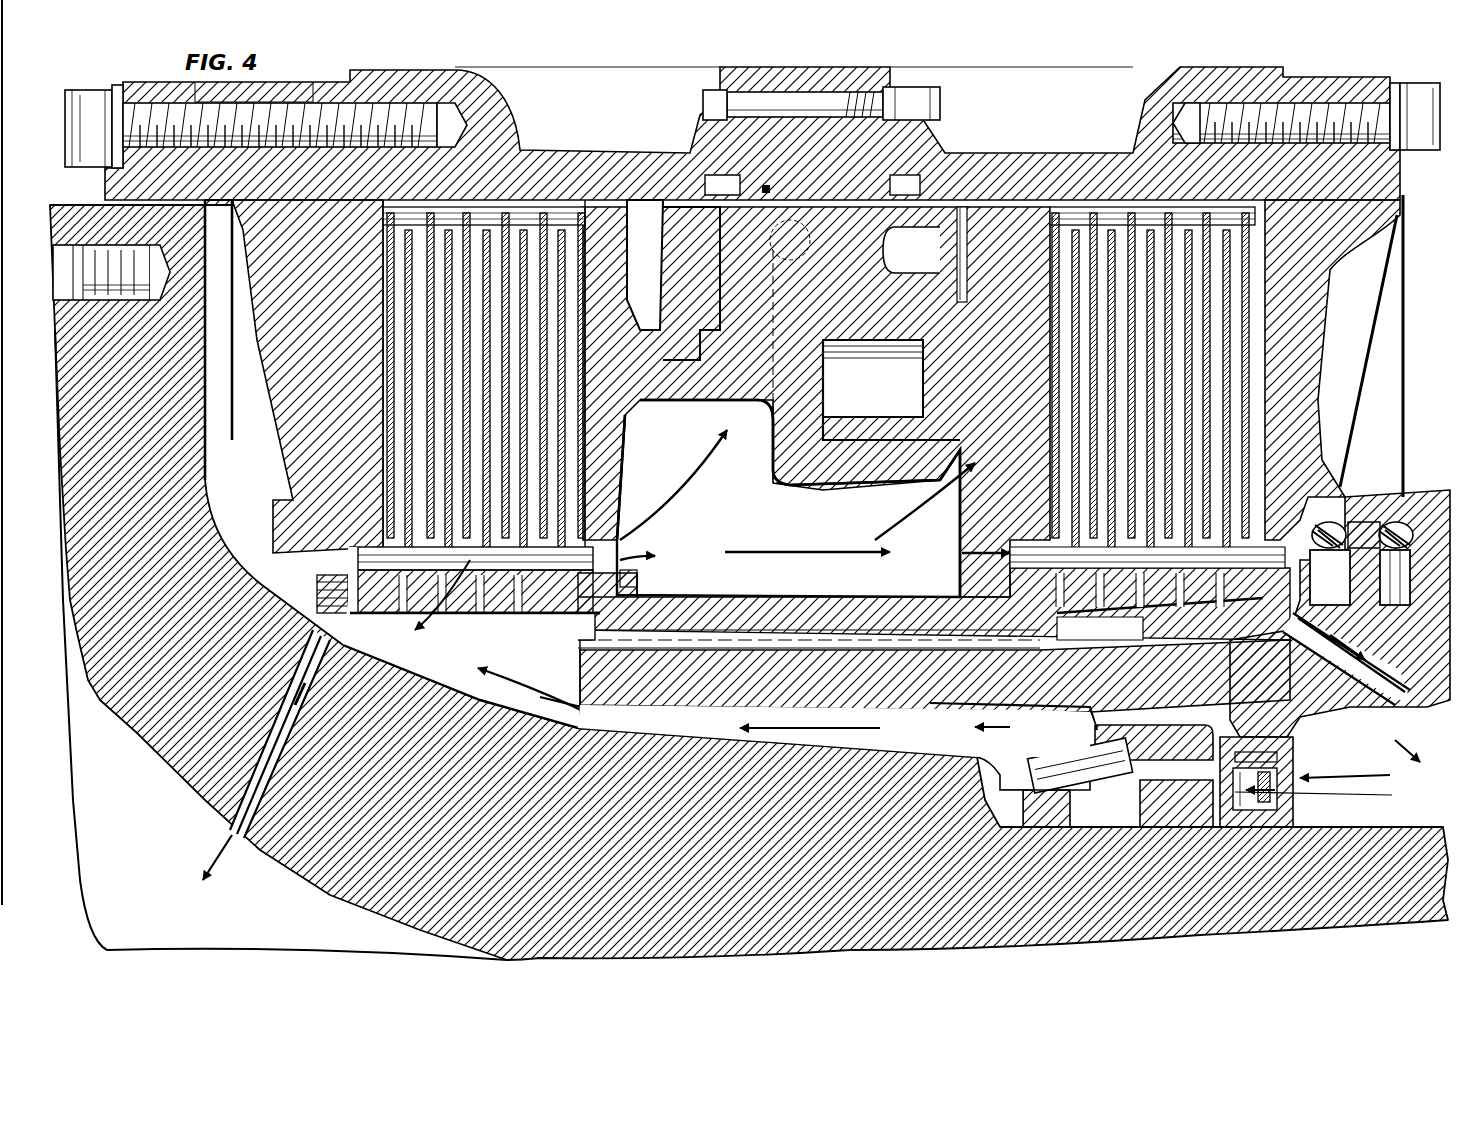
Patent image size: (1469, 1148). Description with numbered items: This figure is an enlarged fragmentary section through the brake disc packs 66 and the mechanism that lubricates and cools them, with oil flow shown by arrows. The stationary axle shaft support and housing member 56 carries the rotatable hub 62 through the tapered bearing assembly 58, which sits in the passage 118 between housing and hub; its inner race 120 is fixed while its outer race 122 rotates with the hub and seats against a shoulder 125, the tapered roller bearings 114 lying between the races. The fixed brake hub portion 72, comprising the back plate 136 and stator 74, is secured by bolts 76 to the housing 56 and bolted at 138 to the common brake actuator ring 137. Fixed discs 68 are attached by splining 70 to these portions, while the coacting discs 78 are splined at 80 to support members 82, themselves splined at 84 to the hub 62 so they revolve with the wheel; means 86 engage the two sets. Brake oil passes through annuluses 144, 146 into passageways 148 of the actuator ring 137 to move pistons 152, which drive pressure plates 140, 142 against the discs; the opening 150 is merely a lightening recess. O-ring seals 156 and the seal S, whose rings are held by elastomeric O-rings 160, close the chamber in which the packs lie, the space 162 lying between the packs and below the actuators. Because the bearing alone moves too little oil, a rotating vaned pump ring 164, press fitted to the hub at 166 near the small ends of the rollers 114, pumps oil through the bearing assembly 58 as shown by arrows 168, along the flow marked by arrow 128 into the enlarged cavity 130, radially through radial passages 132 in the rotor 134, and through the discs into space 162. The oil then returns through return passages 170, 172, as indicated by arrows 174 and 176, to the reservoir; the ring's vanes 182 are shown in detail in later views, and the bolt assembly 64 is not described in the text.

The axle shaft support and housing member 56 is at (935, 866).
The tapered bearing assembly 58 is at (1385, 555).
The rotatable hub 62 is at (883, 680).
The bolt assembly 64 is at (770, 60).
The brake disc packs 66 is at (515, 212).
The fixed discs 68 is at (572, 222).
The splining 70 is at (598, 207).
The fixed brake hub portion 72 is at (305, 80).
The stator 74 is at (420, 72).
The bolts 76 is at (111, 272).
The coacting discs 78 is at (618, 510).
The splining 80 is at (640, 545).
The support members 82 is at (543, 618).
The splining 84 is at (732, 628).
The means for operatively engaging the two sets of discs 86 is at (838, 70).
The tapered roller bearings 114 is at (1145, 776).
The passage 118 is at (962, 739).
The inner race 120 is at (1178, 810).
The outer race 122 is at (1170, 740).
The shoulder 125 is at (1282, 728).
The arrow 128 is at (825, 710).
The enlarged cavity 130 is at (500, 651).
The radial passages 132 is at (413, 600).
The support member or rotor 134 is at (372, 600).
The back plate 136 is at (312, 322).
The brake actuator ring 137 is at (820, 88).
The bolted connection 138 is at (728, 100).
The brake actuator pressure plate 140 is at (620, 270).
The brake actuator pressure plate 142 is at (995, 300).
The annulus 144 is at (715, 178).
The annulus 146 is at (910, 180).
The passageways 148 is at (692, 290).
The opening 150 is at (916, 250).
The piston 152 is at (890, 432).
The seals 156 is at (770, 185).
The elastomeric O-rings 160 is at (1408, 512).
The space 162 is at (840, 529).
The rotating vaned pump ring 164 is at (1295, 758).
The press fit engagement 166 is at (1268, 750).
The arrows 168 is at (1350, 778).
The return passage 170 is at (228, 830).
The return passage 172 is at (1388, 682).
The arrow 174 is at (213, 860).
The arrow 176 is at (1417, 755).
The vanes 182 is at (1272, 797).
The seal S is at (1365, 525).